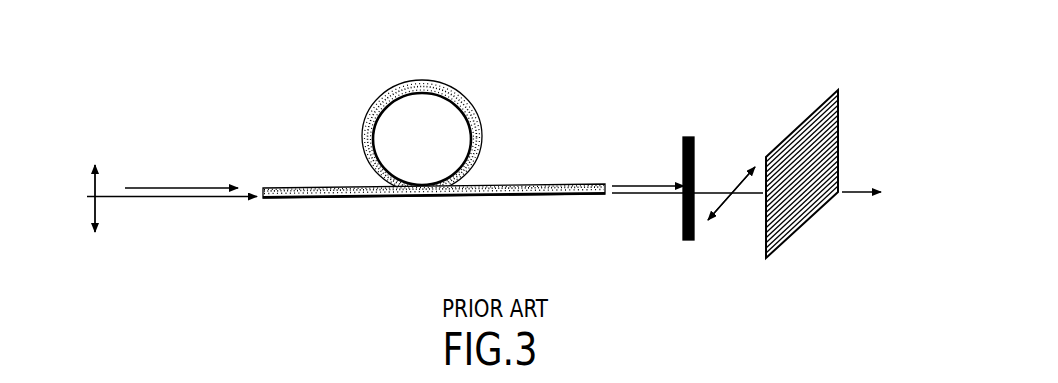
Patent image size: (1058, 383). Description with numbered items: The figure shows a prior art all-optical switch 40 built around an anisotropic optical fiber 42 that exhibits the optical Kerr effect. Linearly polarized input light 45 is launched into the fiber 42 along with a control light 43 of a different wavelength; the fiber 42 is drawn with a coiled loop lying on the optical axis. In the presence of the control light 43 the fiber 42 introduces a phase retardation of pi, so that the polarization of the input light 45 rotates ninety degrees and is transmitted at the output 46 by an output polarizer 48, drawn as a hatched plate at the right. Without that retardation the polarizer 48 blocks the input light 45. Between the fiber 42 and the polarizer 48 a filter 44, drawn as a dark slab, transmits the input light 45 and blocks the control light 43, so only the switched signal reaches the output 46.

The prior art fiber polarization controller system 40 is at (532, 64).
The anisotropic optical fiber 42 is at (410, 197).
The control light 43 is at (163, 195).
The filter 44 is at (687, 137).
The linearly polarized input light 45 is at (155, 200).
The output 46 is at (857, 192).
The output polarizer 48 is at (808, 115).